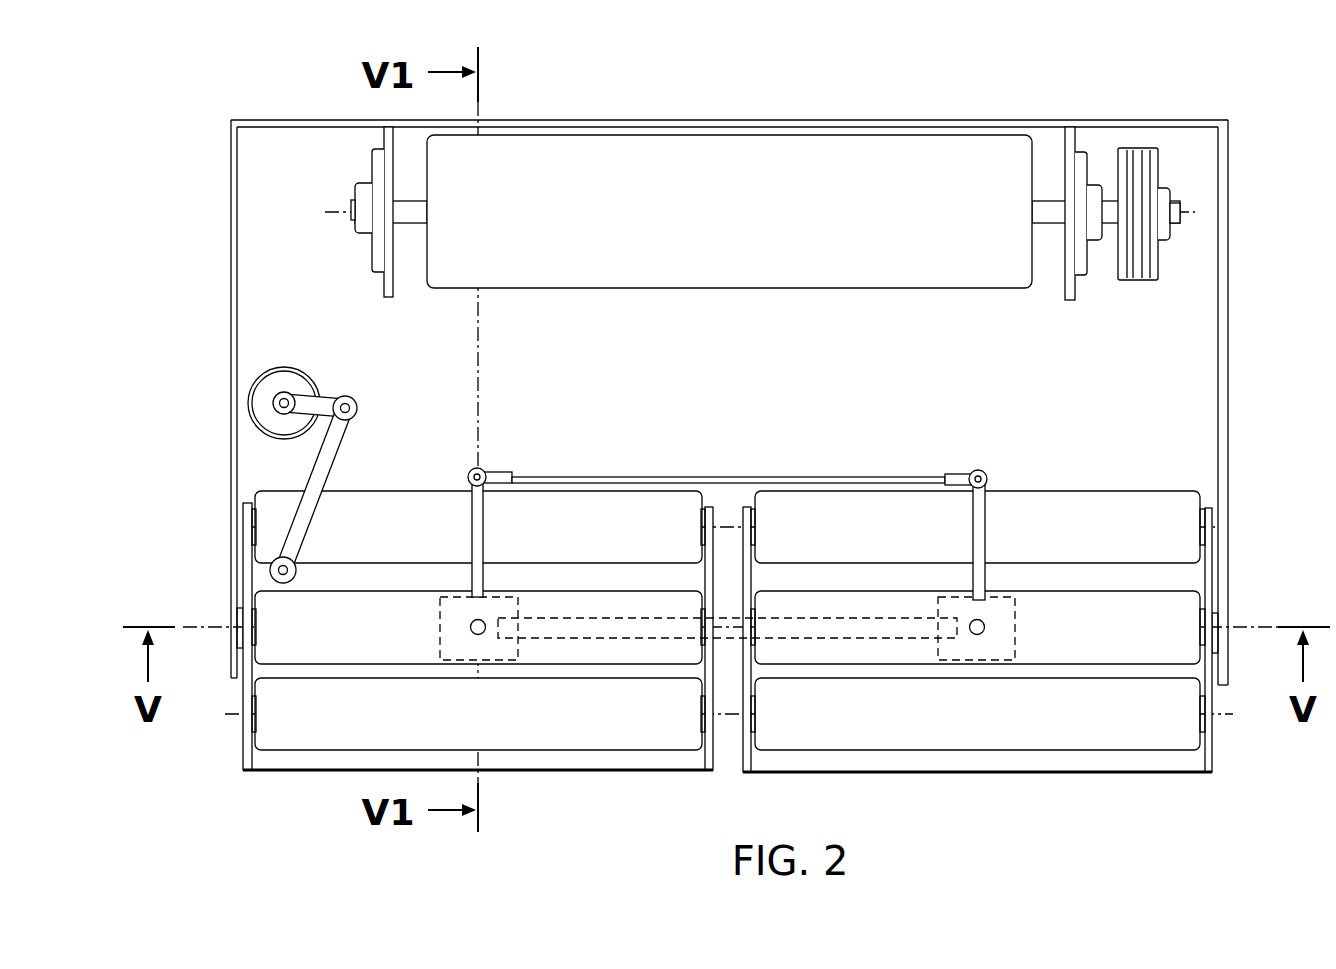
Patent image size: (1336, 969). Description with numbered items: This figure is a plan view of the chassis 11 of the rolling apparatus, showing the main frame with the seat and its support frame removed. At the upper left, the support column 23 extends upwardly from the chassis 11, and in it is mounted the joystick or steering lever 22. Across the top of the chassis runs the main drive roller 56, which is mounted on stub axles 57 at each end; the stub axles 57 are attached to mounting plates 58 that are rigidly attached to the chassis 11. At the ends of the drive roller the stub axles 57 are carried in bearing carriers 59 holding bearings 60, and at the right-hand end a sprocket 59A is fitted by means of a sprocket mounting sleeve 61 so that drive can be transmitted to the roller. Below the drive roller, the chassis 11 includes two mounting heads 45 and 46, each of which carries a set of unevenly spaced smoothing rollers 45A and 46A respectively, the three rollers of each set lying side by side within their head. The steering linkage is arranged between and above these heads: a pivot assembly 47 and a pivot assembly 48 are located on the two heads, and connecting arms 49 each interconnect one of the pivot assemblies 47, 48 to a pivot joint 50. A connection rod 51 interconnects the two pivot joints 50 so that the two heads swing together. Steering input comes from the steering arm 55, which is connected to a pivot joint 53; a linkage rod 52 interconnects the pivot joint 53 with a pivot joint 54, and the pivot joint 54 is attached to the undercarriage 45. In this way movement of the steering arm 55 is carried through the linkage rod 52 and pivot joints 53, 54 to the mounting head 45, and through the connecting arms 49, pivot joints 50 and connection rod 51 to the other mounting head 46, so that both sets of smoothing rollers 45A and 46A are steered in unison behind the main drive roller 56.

The chassis 11 is at (300, 209).
The steering lever 22 is at (274, 400).
The support column 23 is at (287, 367).
The mounting head 45 is at (243, 753).
The smoothing rollers 45A is at (283, 610).
The mounting head 46 is at (1208, 755).
The smoothing rollers 46A is at (1122, 613).
The pivot assembly 47 is at (457, 643).
The pivot assembly 48 is at (1008, 645).
The connecting arms 49 is at (478, 573).
The pivot joints 50 is at (492, 473).
The connection rod 51 is at (715, 478).
The linkage rod 52 is at (323, 468).
The pivot joint 53 is at (363, 413).
The pivot joint 54 is at (297, 568).
The steering arm 55 is at (323, 402).
The main drive roller 56 is at (745, 170).
The stub axles 57 is at (412, 223).
The mounting plates 58 is at (1063, 135).
The bearing carriers 59 is at (376, 173).
The sprocket 59A is at (1143, 162).
The bearings 60 is at (362, 226).
The sprocket mounting sleeve 61 is at (1165, 236).